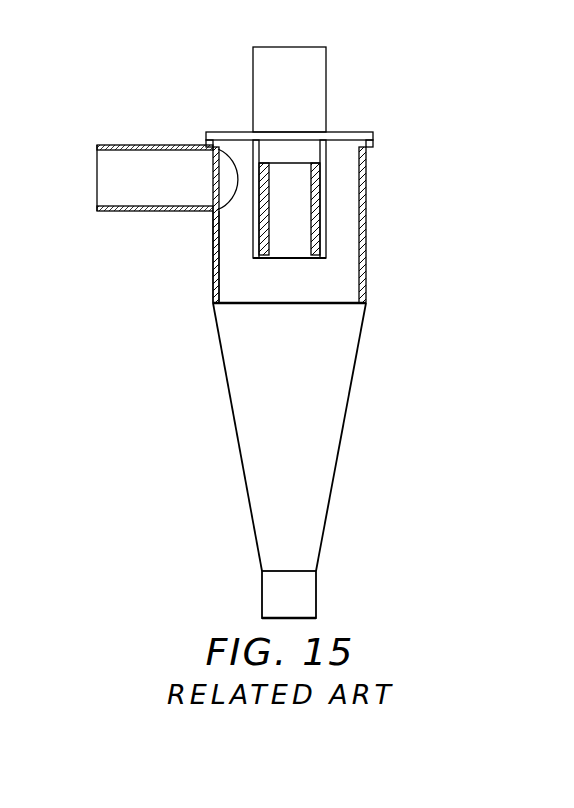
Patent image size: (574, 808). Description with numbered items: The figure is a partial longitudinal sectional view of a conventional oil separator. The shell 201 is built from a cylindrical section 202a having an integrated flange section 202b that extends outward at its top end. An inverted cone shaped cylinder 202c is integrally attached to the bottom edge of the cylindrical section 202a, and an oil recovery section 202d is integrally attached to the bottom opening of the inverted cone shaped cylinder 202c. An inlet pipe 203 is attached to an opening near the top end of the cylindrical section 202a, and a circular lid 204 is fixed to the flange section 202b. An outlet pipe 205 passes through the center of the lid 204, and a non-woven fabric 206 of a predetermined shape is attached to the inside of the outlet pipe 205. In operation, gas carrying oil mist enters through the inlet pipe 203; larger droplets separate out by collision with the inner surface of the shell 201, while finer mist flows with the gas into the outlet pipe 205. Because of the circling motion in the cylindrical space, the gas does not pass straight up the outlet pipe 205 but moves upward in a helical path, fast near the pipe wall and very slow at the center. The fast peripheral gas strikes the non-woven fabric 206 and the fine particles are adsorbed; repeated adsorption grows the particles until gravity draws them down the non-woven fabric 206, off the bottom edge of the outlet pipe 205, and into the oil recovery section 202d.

The shell 201 is at (366, 296).
The cylindrical section 202a is at (213, 262).
The flange section 202b is at (366, 145).
The inverted cone shaped cylinder 202c is at (340, 447).
The oil recovery section 202d is at (316, 597).
The inlet pipe 203 is at (137, 146).
The circular lid 204 is at (358, 131).
The outlet pipe 205 is at (326, 72).
The non-woven fabric 206 is at (266, 213).